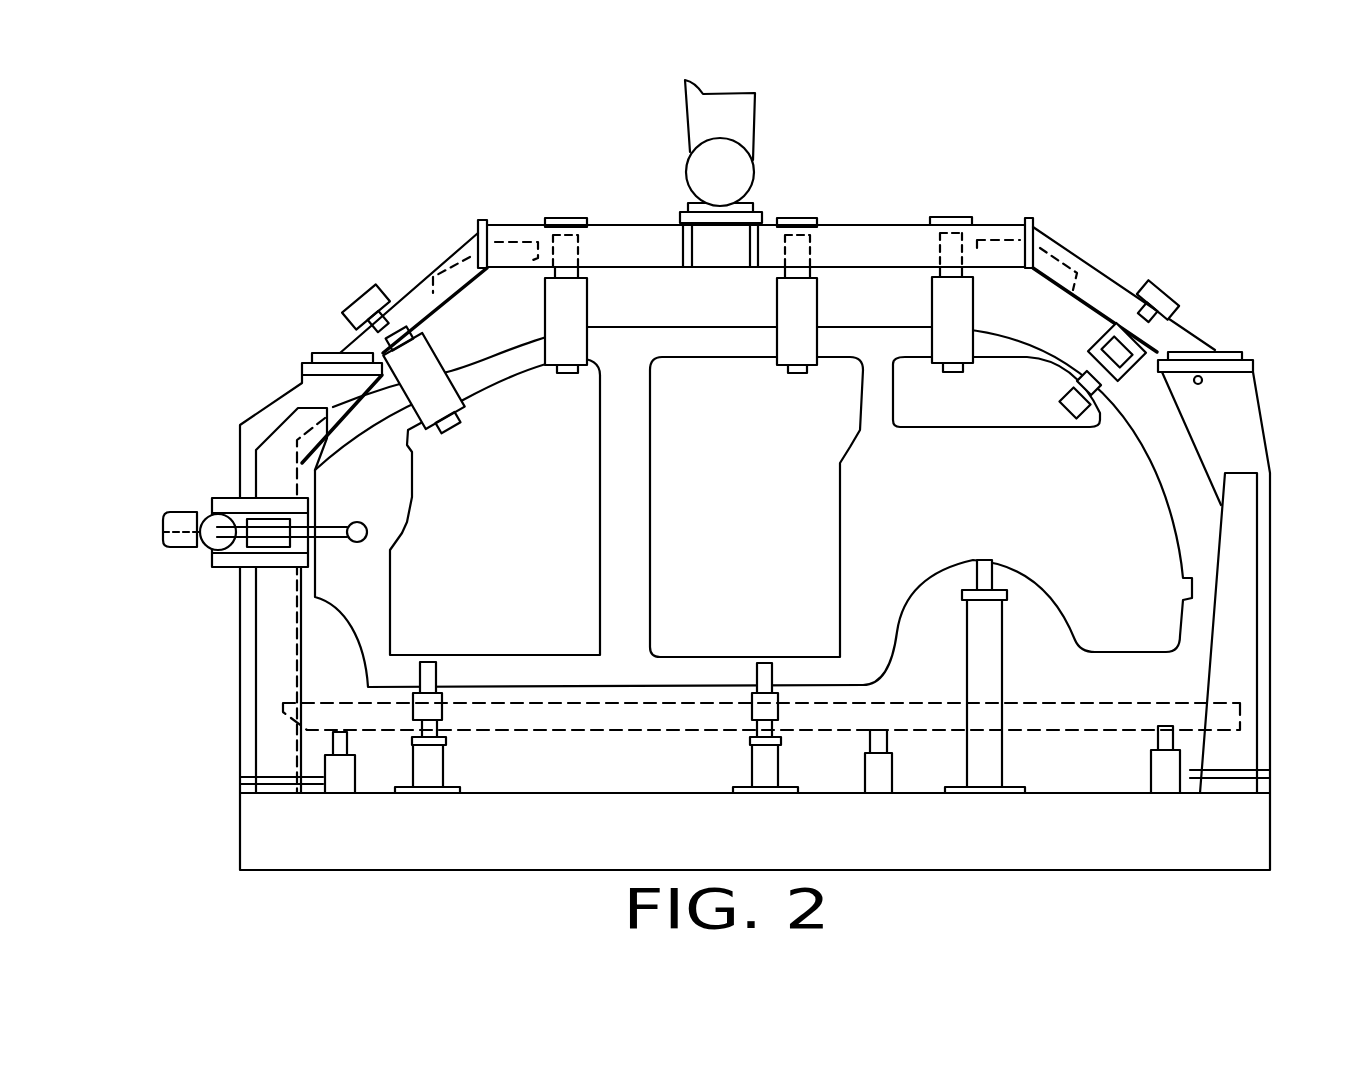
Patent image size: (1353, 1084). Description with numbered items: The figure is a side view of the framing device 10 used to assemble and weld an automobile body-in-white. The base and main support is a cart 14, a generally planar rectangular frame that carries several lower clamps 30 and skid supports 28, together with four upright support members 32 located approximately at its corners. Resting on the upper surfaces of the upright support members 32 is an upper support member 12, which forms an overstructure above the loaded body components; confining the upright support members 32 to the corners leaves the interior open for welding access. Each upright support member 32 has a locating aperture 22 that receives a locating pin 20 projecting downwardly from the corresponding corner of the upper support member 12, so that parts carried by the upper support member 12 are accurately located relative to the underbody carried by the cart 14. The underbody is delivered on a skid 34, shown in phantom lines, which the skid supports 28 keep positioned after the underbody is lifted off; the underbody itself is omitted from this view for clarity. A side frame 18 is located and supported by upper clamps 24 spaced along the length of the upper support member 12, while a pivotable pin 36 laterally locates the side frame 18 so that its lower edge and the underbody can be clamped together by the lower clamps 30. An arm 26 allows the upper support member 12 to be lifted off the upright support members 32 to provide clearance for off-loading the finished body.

The framing device 10 is at (1147, 253).
The upper support member 12 is at (863, 240).
The cart 14 is at (1247, 818).
The side frame 18 is at (1147, 483).
The locating pin 20 is at (343, 380).
The locating aperture 22 is at (337, 353).
The upper clamp 24 is at (557, 353).
The arm 26 is at (737, 120).
The skid support 28 is at (338, 778).
The lower clamp 30 is at (428, 773).
The upright support member 32 is at (1243, 527).
The skid 34 is at (1168, 699).
The pivotable pin 36 is at (283, 547).